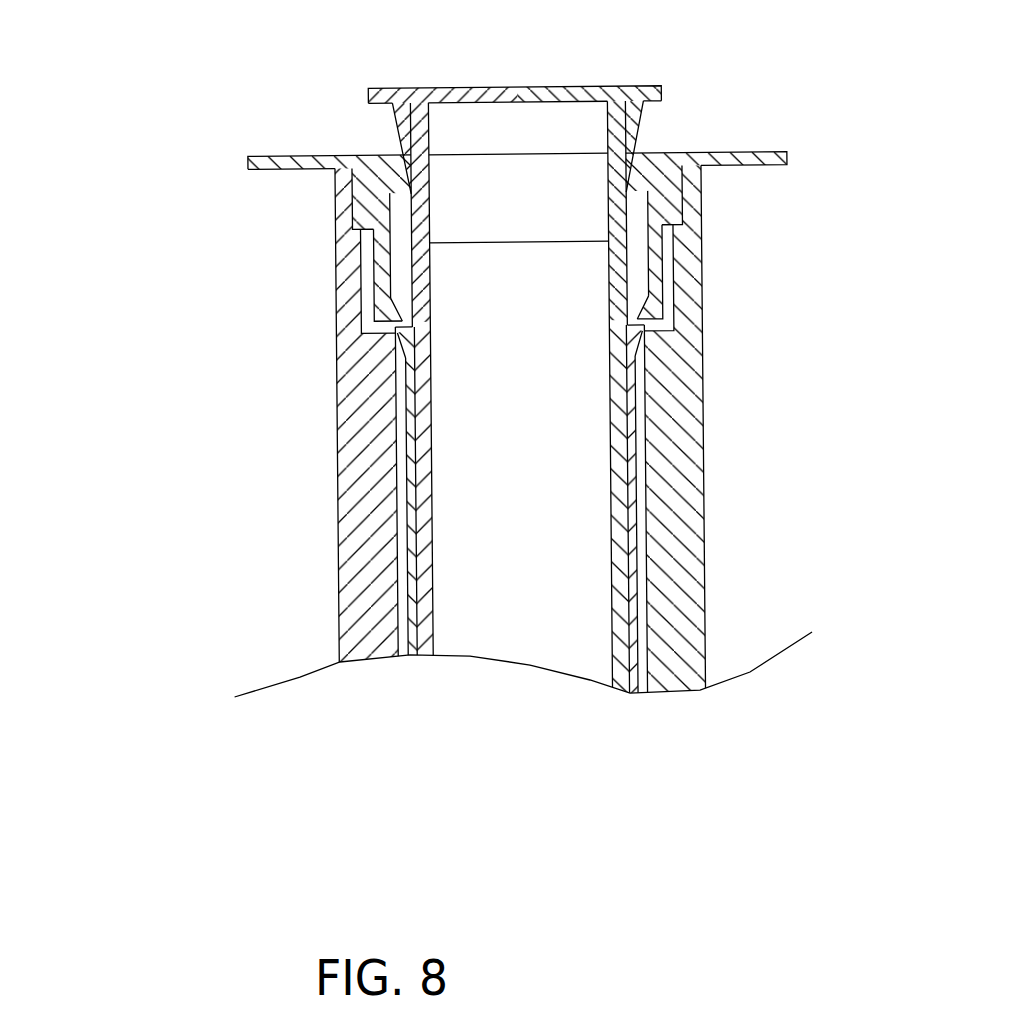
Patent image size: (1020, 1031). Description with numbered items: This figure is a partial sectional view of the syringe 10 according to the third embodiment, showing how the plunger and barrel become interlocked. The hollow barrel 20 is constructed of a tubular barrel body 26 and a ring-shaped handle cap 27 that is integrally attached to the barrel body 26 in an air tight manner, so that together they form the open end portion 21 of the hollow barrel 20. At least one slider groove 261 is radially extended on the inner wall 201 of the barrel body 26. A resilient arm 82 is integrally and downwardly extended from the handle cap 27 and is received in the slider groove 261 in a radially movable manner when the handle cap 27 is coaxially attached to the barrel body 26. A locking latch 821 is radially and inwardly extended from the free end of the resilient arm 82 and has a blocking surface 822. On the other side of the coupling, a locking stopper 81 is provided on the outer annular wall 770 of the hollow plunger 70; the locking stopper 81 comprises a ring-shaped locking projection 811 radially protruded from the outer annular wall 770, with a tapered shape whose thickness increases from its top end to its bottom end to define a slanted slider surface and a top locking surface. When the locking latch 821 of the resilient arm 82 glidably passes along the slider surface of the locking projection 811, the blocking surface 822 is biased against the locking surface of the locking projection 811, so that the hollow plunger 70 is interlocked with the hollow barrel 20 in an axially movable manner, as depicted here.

The syringe 10 is at (876, 205).
The open end portion 21 is at (148, 90).
The handle cap 27 is at (367, 163).
The barrel body 26 is at (345, 212).
The hollow barrel 20 is at (665, 512).
The inner wall 201 is at (394, 552).
The resilient arm 82 is at (188, 333).
The slider groove 261 is at (374, 275).
The locking latch 821 is at (389, 324).
The blocking surface 822 is at (386, 329).
The hollow plunger 70 is at (624, 432).
The outer annular wall 770 is at (406, 617).
The locking stopper 81 is at (494, 452).
The locking projection 811 is at (400, 343).